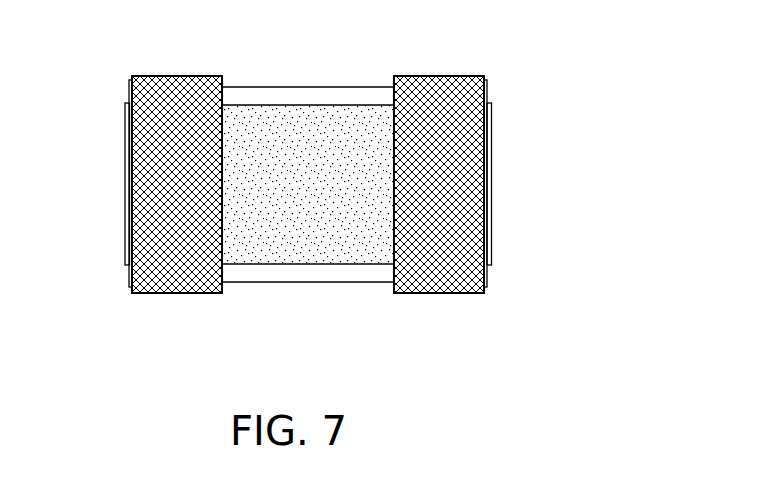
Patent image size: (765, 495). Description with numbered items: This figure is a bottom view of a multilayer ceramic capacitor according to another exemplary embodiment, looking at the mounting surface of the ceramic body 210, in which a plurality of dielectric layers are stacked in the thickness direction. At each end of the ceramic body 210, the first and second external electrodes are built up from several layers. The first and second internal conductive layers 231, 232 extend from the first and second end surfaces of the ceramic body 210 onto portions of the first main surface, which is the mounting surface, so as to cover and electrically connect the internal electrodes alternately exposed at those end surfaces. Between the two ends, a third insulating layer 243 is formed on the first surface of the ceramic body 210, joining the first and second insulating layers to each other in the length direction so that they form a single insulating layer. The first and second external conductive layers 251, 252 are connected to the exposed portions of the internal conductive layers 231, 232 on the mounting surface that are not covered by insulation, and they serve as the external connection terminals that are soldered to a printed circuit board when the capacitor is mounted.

The ceramic body 210 is at (320, 98).
The third insulating layer 243 is at (297, 252).
The first internal conductive layer 231 is at (129, 92).
The second internal conductive layer 232 is at (487, 275).
The first external conductive layer 251 is at (145, 177).
The second external conductive layer 252 is at (453, 182).